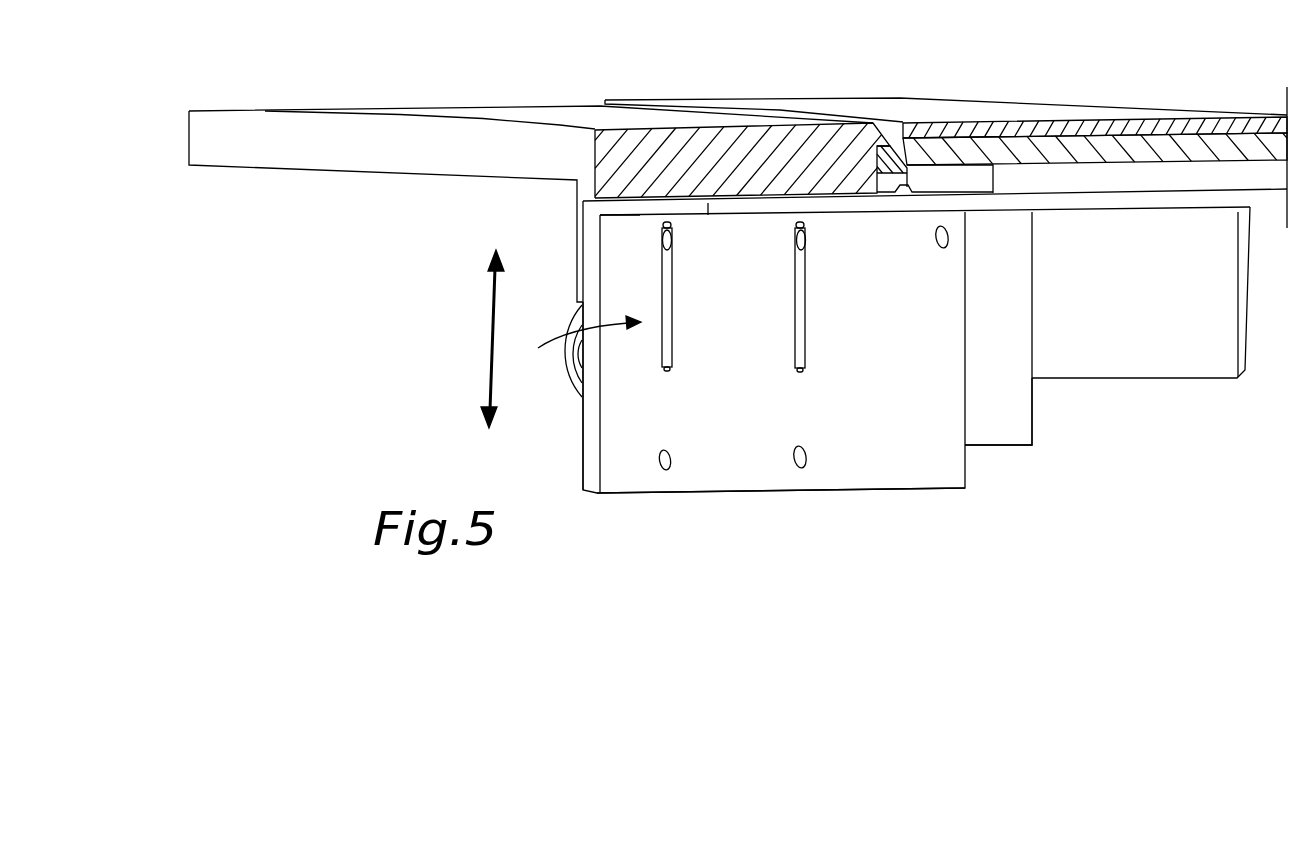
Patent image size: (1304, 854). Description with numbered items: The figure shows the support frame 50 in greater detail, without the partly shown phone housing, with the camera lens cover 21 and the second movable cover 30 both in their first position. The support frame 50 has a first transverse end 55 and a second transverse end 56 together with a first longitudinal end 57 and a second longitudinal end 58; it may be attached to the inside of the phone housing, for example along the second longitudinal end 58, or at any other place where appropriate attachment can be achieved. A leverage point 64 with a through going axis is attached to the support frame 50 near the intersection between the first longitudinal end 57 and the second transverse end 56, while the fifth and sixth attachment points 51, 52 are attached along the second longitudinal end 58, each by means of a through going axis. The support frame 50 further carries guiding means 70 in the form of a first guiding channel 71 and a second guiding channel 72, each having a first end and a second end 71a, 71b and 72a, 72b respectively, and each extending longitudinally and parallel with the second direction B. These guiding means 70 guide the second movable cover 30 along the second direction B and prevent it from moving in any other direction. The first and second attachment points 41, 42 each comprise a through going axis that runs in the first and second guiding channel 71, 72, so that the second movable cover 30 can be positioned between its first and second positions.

The camera lens cover 21 is at (952, 107).
The second movable cover 30 is at (535, 113).
The first attachment point 41 is at (660, 238).
The second attachment point 42 is at (796, 240).
The support frame 50 is at (903, 460).
The fifth attachment point 51 is at (667, 470).
The sixth attachment point 52 is at (803, 467).
The first transverse end 55 is at (592, 417).
The second transverse end 56 is at (965, 462).
The first longitudinal end 57 is at (628, 215).
The second longitudinal end 58 is at (716, 492).
The leverage point 64 is at (947, 248).
The guiding means 70 is at (574, 342).
The first guiding channel 71 is at (668, 324).
The first end of first guiding channel 71a is at (670, 224).
The second end of first guiding channel 71b is at (662, 371).
The second guiding channel 72 is at (802, 324).
The first end of second guiding channel 72a is at (803, 224).
The second end of second guiding channel 72b is at (800, 372).
The second direction B is at (492, 333).